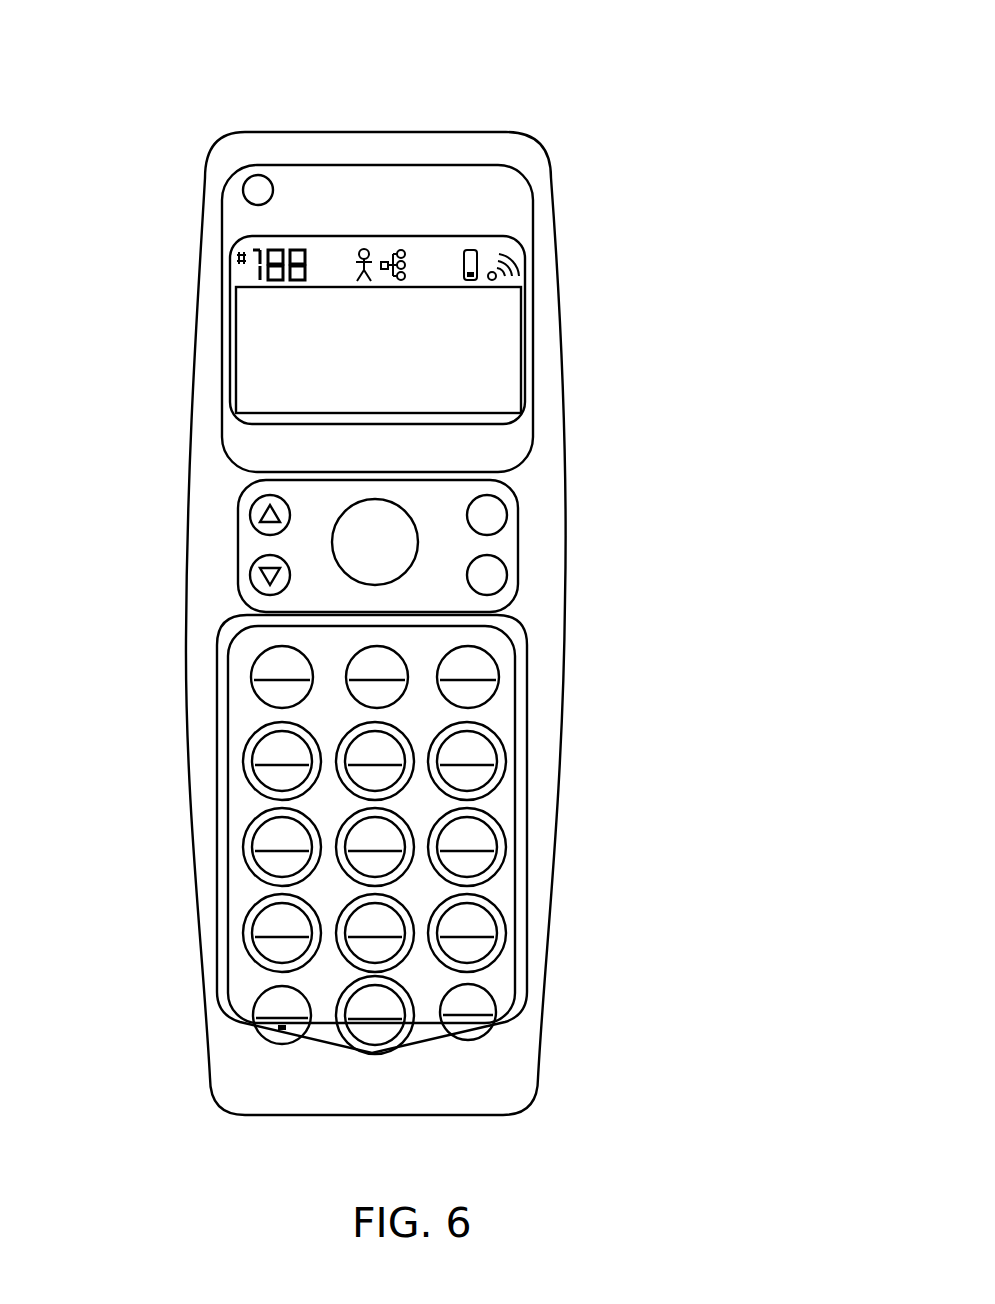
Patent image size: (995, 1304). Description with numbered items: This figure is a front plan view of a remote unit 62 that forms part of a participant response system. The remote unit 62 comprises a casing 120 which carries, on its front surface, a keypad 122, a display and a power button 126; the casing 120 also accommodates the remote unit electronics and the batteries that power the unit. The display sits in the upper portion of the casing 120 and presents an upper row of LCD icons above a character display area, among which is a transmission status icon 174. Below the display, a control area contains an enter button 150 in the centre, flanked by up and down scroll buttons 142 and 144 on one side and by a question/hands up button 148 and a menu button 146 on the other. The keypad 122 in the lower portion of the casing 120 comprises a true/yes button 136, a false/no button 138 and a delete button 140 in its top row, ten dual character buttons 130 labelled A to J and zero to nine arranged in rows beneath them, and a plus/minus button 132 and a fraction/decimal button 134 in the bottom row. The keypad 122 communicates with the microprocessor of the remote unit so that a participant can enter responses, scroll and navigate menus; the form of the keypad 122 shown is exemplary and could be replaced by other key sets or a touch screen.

The remote unit 62 is at (776, 112).
The casing 120 is at (483, 130).
The power button 126 is at (244, 195).
The transmission status icon 174 is at (509, 284).
The enter button 150 is at (370, 512).
The up scroll button 142 is at (252, 516).
The down scroll button 144 is at (253, 583).
The question/hands up button 148 is at (496, 530).
The menu button 146 is at (502, 587).
The keypad 122 is at (503, 811).
The true/yes button 136 is at (251, 686).
The false/no button 138 is at (516, 658).
The delete button 140 is at (562, 678).
The dual character buttons 130 is at (176, 709).
The plus/minus button 132 is at (255, 1024).
The fraction/decimal button 134 is at (488, 1026).